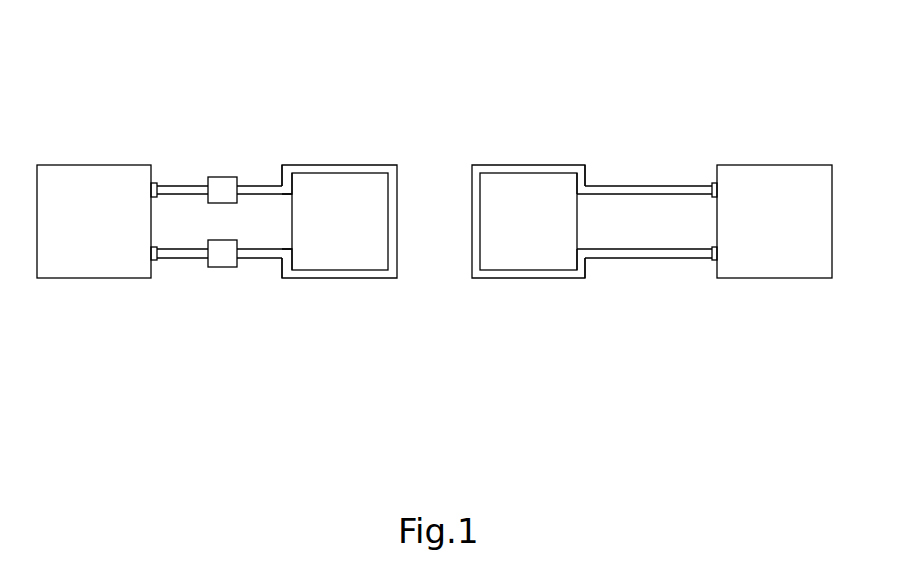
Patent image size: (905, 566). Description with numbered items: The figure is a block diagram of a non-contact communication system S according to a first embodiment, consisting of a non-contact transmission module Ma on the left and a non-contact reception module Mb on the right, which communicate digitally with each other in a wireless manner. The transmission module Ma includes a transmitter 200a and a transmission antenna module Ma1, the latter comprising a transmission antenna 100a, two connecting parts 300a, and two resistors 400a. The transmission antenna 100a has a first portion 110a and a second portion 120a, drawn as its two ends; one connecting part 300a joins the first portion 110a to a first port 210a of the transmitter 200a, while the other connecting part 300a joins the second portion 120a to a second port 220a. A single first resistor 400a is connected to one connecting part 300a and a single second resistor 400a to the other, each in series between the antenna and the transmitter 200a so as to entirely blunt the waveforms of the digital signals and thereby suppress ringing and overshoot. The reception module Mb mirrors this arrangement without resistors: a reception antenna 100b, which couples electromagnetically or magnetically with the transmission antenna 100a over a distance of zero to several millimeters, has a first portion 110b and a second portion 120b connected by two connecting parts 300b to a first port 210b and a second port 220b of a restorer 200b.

The non-contact communication system S is at (360, 56).
The non-contact transmission module Ma is at (345, 157).
The non-contact reception module Mb is at (526, 156).
The transmission antenna module Ma1 is at (137, 377).
The transmission antenna 100a is at (340, 275).
The first portion 110a is at (281, 184).
The second portion 120a is at (284, 260).
The transmitter 200a is at (52, 253).
The first port 210a is at (151, 189).
The second port 220a is at (151, 254).
The connecting part 300a is at (172, 190).
The resistor 400a is at (222, 190).
The reception antenna 100b is at (525, 278).
The first portion 110b is at (594, 184).
The second portion 120b is at (587, 262).
The restorer 200b is at (817, 253).
The first port 210b is at (717, 190).
The second port 220b is at (717, 257).
The connecting part 300b is at (648, 185).